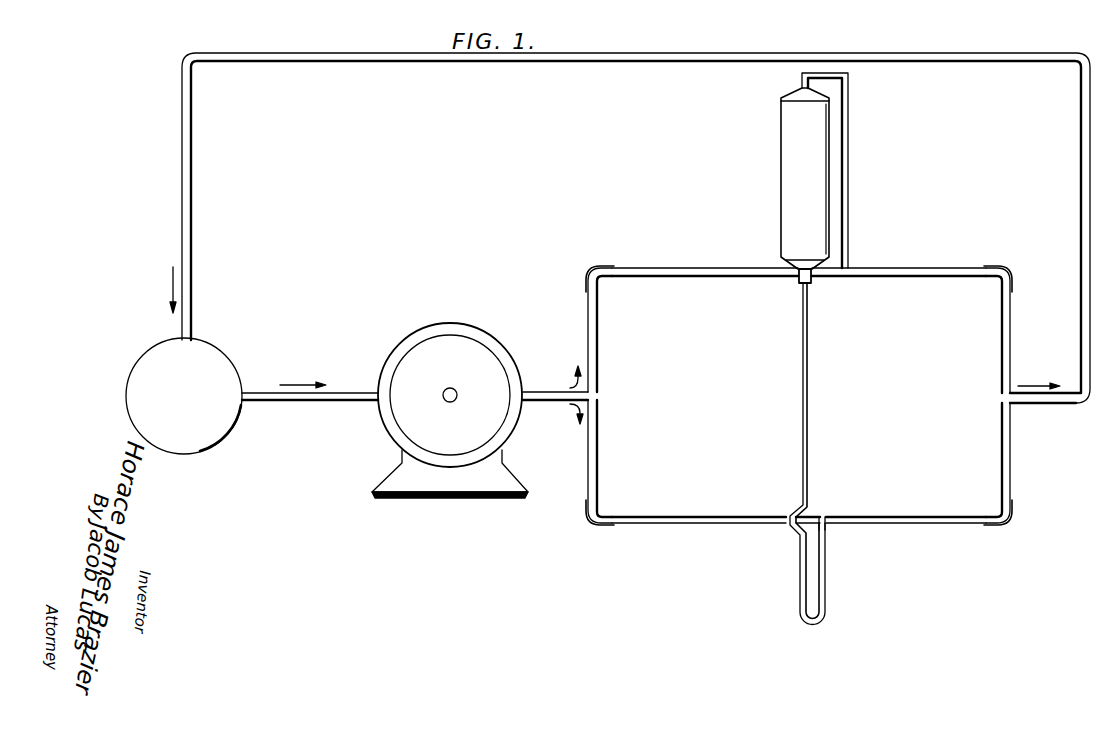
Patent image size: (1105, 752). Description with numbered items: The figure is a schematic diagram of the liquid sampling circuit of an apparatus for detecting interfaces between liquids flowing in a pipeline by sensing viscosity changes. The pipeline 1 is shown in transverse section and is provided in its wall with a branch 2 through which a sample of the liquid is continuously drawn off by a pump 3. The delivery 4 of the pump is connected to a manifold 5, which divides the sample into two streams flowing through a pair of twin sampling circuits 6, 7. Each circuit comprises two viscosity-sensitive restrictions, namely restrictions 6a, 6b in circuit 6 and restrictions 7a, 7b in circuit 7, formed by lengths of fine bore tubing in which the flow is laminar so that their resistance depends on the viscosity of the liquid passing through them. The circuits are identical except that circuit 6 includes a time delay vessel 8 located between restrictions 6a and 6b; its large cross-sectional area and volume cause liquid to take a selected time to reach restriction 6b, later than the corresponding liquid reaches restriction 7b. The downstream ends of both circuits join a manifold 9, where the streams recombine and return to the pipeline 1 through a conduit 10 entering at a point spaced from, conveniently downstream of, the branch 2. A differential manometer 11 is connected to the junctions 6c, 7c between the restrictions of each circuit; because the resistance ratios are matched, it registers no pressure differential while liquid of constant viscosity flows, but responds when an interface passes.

The pipeline 1 is at (217, 351).
The branch 2 is at (250, 393).
The pump 3 is at (452, 355).
The delivery 4 is at (530, 395).
The manifold 5 is at (598, 356).
The sampling circuit 6 is at (862, 271).
The viscosity-sensitive restriction 6a is at (680, 278).
The viscosity-sensitive restriction 6b is at (907, 278).
The junction 6c is at (797, 284).
The sampling circuit 7 is at (799, 517).
The viscosity-sensitive restriction 7a is at (675, 524).
The viscosity-sensitive restriction 7b is at (887, 523).
The junction 7c is at (823, 526).
The time delay vessel 8 is at (805, 139).
The manifold 9 is at (1009, 357).
The conduit 10 is at (379, 62).
The differential manometer 11 is at (800, 575).